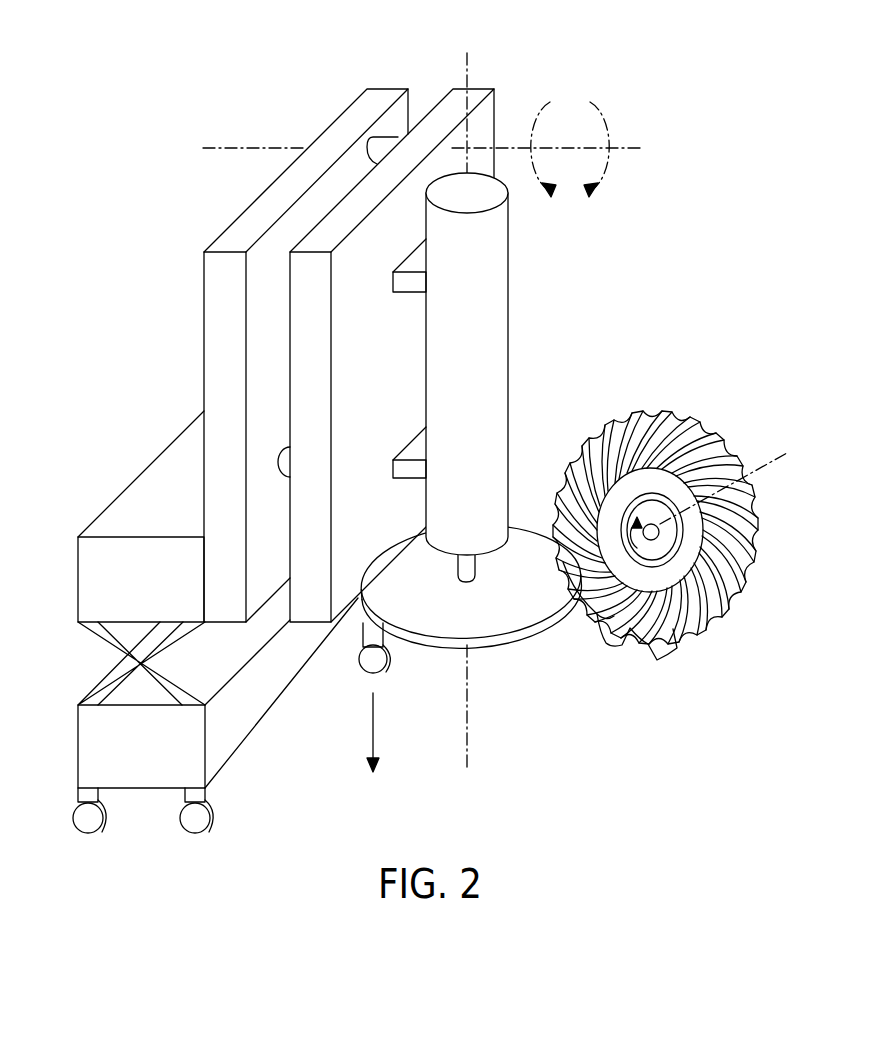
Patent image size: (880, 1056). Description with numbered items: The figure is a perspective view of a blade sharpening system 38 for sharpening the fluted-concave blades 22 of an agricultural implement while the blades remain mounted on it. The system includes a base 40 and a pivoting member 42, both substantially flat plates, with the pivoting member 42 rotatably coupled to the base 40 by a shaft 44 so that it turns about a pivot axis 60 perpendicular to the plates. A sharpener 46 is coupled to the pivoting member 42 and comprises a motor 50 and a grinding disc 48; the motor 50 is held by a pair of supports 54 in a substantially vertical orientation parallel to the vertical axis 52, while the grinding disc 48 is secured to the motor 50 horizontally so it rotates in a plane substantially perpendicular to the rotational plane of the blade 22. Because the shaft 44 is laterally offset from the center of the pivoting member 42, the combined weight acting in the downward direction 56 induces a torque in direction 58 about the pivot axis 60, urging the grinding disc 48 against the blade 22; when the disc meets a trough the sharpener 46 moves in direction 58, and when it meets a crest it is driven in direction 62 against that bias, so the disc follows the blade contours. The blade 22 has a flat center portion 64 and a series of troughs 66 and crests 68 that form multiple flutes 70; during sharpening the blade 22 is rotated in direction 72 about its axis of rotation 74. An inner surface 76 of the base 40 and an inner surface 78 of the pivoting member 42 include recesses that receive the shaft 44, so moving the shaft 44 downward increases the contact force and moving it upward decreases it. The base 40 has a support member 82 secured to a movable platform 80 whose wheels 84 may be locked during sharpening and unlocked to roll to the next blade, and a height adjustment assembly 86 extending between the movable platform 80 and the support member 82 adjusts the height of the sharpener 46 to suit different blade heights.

The blade 22 is at (673, 539).
The blade sharpening system 38 is at (160, 86).
The base 40 is at (242, 213).
The pivoting member 42 is at (475, 88).
The shaft 44 is at (390, 138).
The sharpener 46 is at (471, 364).
The grinding disc 48 is at (515, 640).
The motor 50 is at (509, 228).
The vertical axis 52 is at (465, 705).
The supports 54 is at (405, 283).
The downward direction 56 is at (373, 725).
The direction 58 is at (533, 125).
The pivot axis 60 is at (258, 148).
The direction 62 is at (605, 118).
The flat center portion 64 is at (748, 598).
The troughs 66 is at (610, 620).
The crests 68 is at (655, 636).
The flutes 70 is at (673, 530).
The direction 72 is at (640, 555).
The axis of rotation 74 is at (782, 465).
The inner surface 76 is at (258, 340).
The inner surface 78 is at (290, 477).
The movable platform 80 is at (77, 745).
The support member 82 is at (77, 578).
The wheels 84 is at (95, 835).
The height adjustment assembly 86 is at (72, 660).